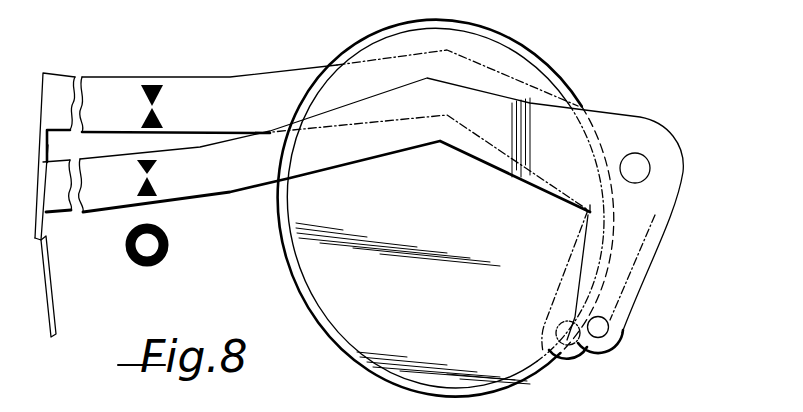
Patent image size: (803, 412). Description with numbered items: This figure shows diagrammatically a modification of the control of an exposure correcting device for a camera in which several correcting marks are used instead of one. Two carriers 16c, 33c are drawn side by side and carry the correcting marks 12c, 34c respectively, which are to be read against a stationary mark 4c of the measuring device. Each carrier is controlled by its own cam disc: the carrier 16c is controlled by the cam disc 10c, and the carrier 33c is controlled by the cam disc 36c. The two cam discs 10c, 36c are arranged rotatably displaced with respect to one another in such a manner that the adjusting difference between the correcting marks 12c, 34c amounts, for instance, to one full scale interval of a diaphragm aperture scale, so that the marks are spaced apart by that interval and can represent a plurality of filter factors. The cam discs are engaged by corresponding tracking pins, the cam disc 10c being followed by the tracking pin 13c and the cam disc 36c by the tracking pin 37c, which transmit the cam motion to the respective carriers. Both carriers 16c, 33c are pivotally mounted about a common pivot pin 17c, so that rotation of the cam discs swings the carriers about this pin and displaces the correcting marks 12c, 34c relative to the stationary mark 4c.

The stationary mark 4c is at (127, 250).
The cam disc 10c is at (318, 268).
The correcting mark 12c is at (150, 178).
The tracking pin 13c is at (608, 327).
The carrier 16c is at (238, 178).
The common pivot pin 17c is at (645, 166).
The carrier 33c is at (215, 102).
The correcting mark 34c is at (147, 107).
The cam disc 36c is at (319, 340).
The tracking pin 37c is at (572, 358).